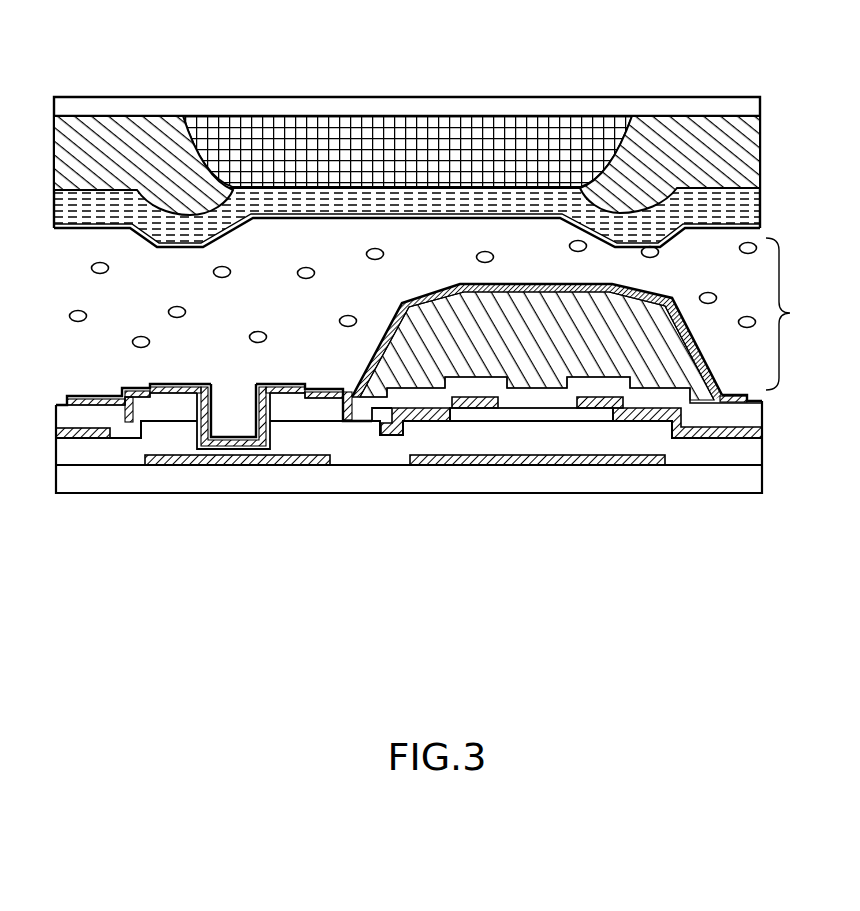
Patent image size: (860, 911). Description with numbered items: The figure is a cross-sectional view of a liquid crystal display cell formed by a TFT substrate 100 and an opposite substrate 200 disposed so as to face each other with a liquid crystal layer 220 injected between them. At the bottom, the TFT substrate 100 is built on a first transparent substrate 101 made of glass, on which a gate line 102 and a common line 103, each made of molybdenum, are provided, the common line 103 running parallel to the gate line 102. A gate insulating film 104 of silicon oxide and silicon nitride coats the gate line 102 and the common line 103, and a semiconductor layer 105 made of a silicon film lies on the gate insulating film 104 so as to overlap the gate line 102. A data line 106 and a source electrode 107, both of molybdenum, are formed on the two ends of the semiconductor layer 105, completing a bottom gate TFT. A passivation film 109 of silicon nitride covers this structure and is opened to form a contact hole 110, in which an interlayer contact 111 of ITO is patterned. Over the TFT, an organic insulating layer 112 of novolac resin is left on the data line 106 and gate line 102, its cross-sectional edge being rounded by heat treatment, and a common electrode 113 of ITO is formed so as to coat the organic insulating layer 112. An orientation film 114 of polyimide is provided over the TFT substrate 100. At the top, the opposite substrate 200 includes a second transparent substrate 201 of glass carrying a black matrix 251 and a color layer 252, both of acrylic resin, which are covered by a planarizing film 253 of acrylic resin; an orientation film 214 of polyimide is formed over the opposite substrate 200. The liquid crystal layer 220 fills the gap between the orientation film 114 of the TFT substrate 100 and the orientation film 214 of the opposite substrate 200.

The opposite substrate 200 is at (467, 37).
The second transparent substrate 201 is at (755, 106).
The black matrix 251 is at (372, 125).
The color layer 252 is at (672, 125).
The planarizing film 253 is at (757, 202).
The orientation film 214 is at (708, 230).
The liquid crystal layer 220 is at (800, 314).
The TFT substrate 100 is at (467, 577).
The first transparent substrate 101 is at (766, 479).
The gate line 102 is at (589, 463).
The common line 103 is at (243, 463).
The gate insulating film 104 is at (766, 452).
The semiconductor layer 105 is at (533, 413).
The data line 106 is at (384, 431).
The source electrode 107 is at (766, 428).
The passivation film 109 is at (766, 406).
The contact hole 110 is at (193, 441).
The interlayer contact 111 is at (189, 396).
The organic insulating layer 112 is at (437, 303).
The common electrode 113 is at (526, 287).
The orientation film 114 is at (751, 395).